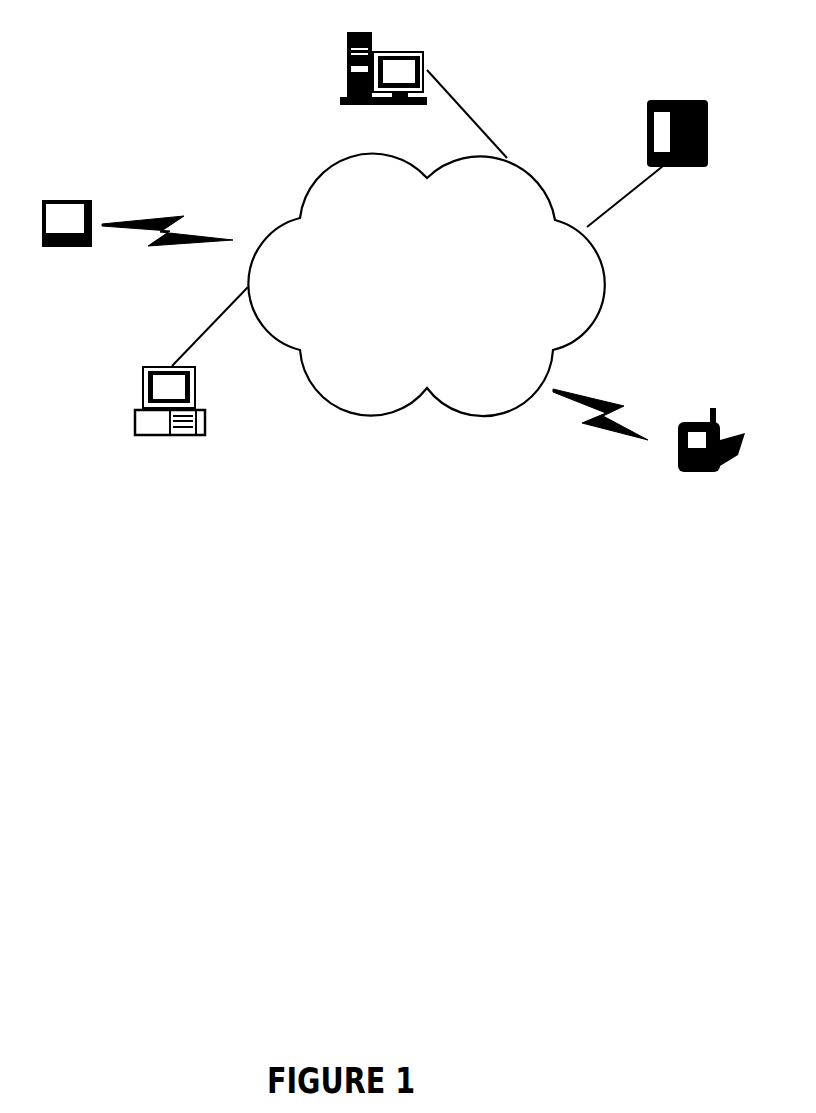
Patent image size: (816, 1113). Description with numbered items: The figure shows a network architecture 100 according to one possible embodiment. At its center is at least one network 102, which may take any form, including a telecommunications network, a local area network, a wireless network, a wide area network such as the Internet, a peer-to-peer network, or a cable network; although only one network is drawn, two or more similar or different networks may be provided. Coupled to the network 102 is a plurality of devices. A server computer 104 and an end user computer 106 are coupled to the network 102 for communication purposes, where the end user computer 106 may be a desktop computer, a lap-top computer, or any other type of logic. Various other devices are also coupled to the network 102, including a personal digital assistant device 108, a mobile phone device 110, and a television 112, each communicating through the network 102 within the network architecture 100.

The network architecture 100 is at (347, 672).
The network 102 is at (480, 418).
The server computer 104 is at (348, 67).
The end user computer 106 is at (135, 417).
The personal digital assistant (PDA) device 108 is at (68, 200).
The mobile phone device 110 is at (676, 421).
The television 112 is at (660, 96).